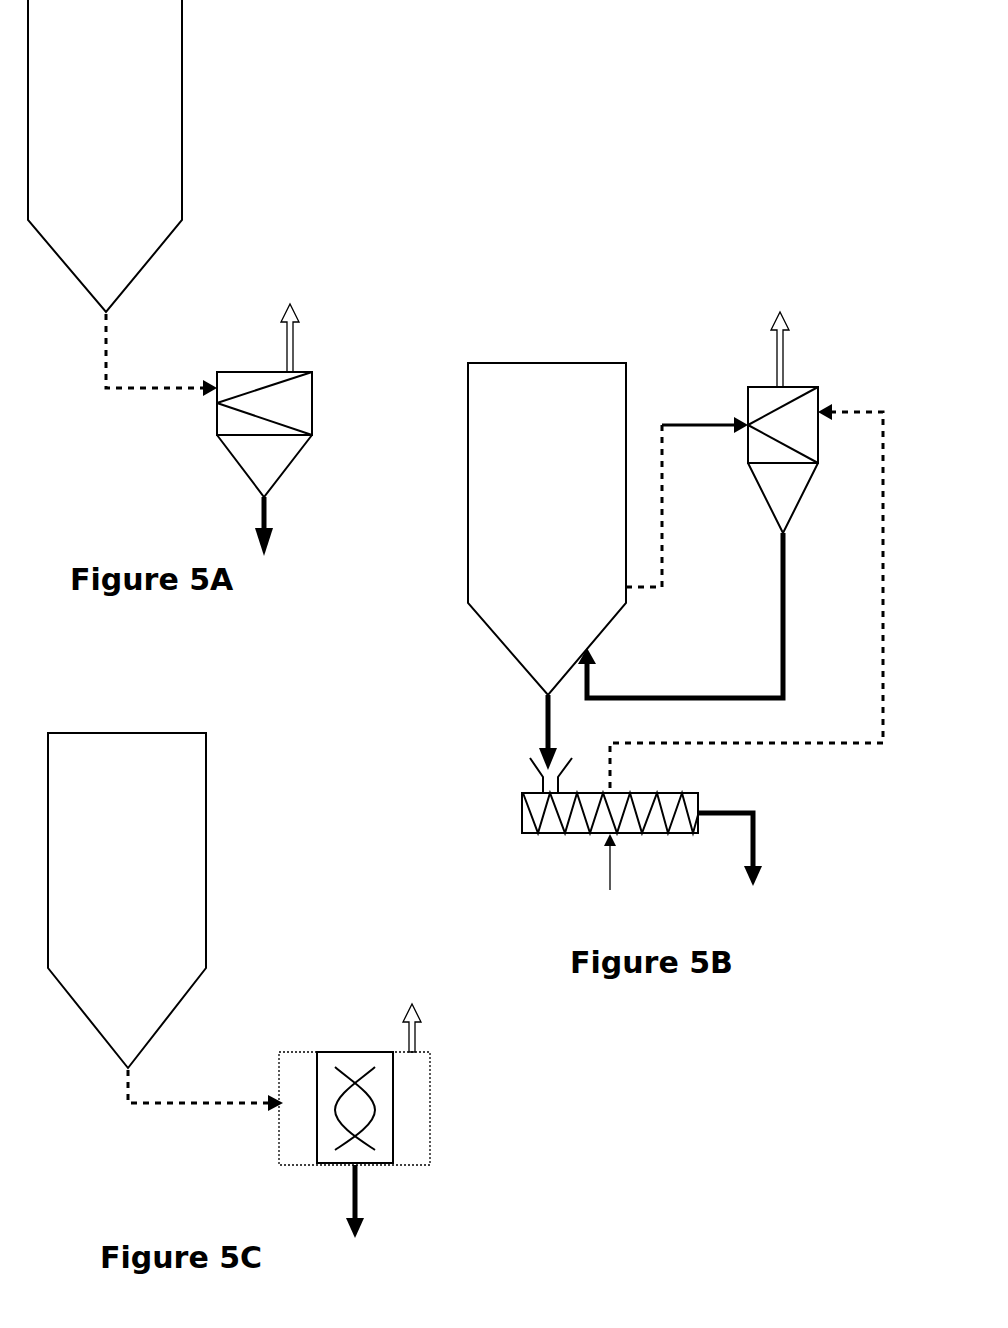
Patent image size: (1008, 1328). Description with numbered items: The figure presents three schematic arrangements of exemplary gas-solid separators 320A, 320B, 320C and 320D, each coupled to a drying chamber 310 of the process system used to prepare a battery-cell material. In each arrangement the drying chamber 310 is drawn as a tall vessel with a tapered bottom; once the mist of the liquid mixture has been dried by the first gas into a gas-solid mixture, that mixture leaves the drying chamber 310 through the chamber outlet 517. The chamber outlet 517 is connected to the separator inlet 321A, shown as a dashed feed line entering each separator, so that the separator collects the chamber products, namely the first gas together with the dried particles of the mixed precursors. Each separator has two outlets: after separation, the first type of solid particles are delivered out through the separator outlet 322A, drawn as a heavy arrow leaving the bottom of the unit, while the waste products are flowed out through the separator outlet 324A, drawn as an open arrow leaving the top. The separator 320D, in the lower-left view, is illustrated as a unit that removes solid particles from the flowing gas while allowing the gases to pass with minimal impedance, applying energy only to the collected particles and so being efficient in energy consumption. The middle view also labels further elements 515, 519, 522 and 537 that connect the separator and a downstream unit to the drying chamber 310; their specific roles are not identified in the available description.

In FIG. 5A, the drying chamber 310 is at (91, 180).
In FIG. 5B, the drying chamber 310 is at (528, 470).
In FIG. 5C, the drying chamber 310 is at (109, 816).
In FIG. 5A, the separation unit (cyclone) 320A is at (273, 245).
In FIG. 5B, the separation unit (cyclone) with recycle 320B is at (780, 258).
In FIG. 5B, the separation and mixing system 320C is at (468, 816).
In FIG. 5C, the gas-solid separator 320D is at (350, 968).
In FIG. 5A, the separator inlet 321A is at (213, 395).
In FIG. 5B, the separator inlet 321A is at (744, 425).
In FIG. 5C, the separator inlet 321A is at (280, 1110).
In FIG. 5A, the separator outlet 322A is at (268, 500).
In FIG. 5B, the separator outlet 322A is at (786, 535).
In FIG. 5C, the separator outlet 322A is at (360, 1172).
In FIG. 5A, the separator outlet 324A is at (298, 372).
In FIG. 5B, the separator outlet 324A is at (787, 387).
In FIG. 5C, the separator outlet 324A is at (416, 1052).
In FIG. 5B, the mixer / screw conveyor 515 is at (608, 855).
In FIG. 5B, the chamber outlet 517 is at (632, 590).
In FIG. 5B, the hopper outlet stream 519 is at (546, 722).
In FIG. 5B, the mixer product outlet 522 is at (710, 820).
In FIG. 5B, the recycle stream to mixer 537 is at (612, 792).